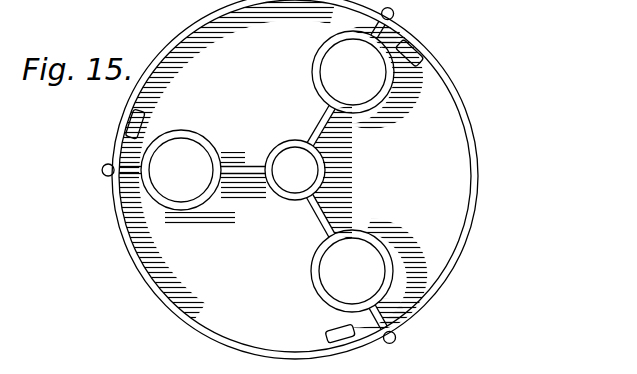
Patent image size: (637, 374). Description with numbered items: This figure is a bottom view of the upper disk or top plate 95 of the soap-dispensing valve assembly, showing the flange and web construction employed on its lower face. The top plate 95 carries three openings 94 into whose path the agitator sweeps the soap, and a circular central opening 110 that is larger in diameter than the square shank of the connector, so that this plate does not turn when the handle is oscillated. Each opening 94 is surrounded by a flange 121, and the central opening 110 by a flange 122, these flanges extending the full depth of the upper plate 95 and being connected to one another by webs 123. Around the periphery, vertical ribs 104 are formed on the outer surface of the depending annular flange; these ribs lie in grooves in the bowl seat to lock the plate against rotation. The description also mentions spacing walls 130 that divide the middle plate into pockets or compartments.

The openings 94 is at (368, 78).
The top plate 95 is at (470, 120).
The vertical ribs 104 is at (394, 12).
The central opening 110 is at (309, 165).
The flanges 121 is at (313, 61).
The flange 122 is at (274, 149).
The webs 123 is at (328, 118).
The spacing walls 130 is at (471, 162).